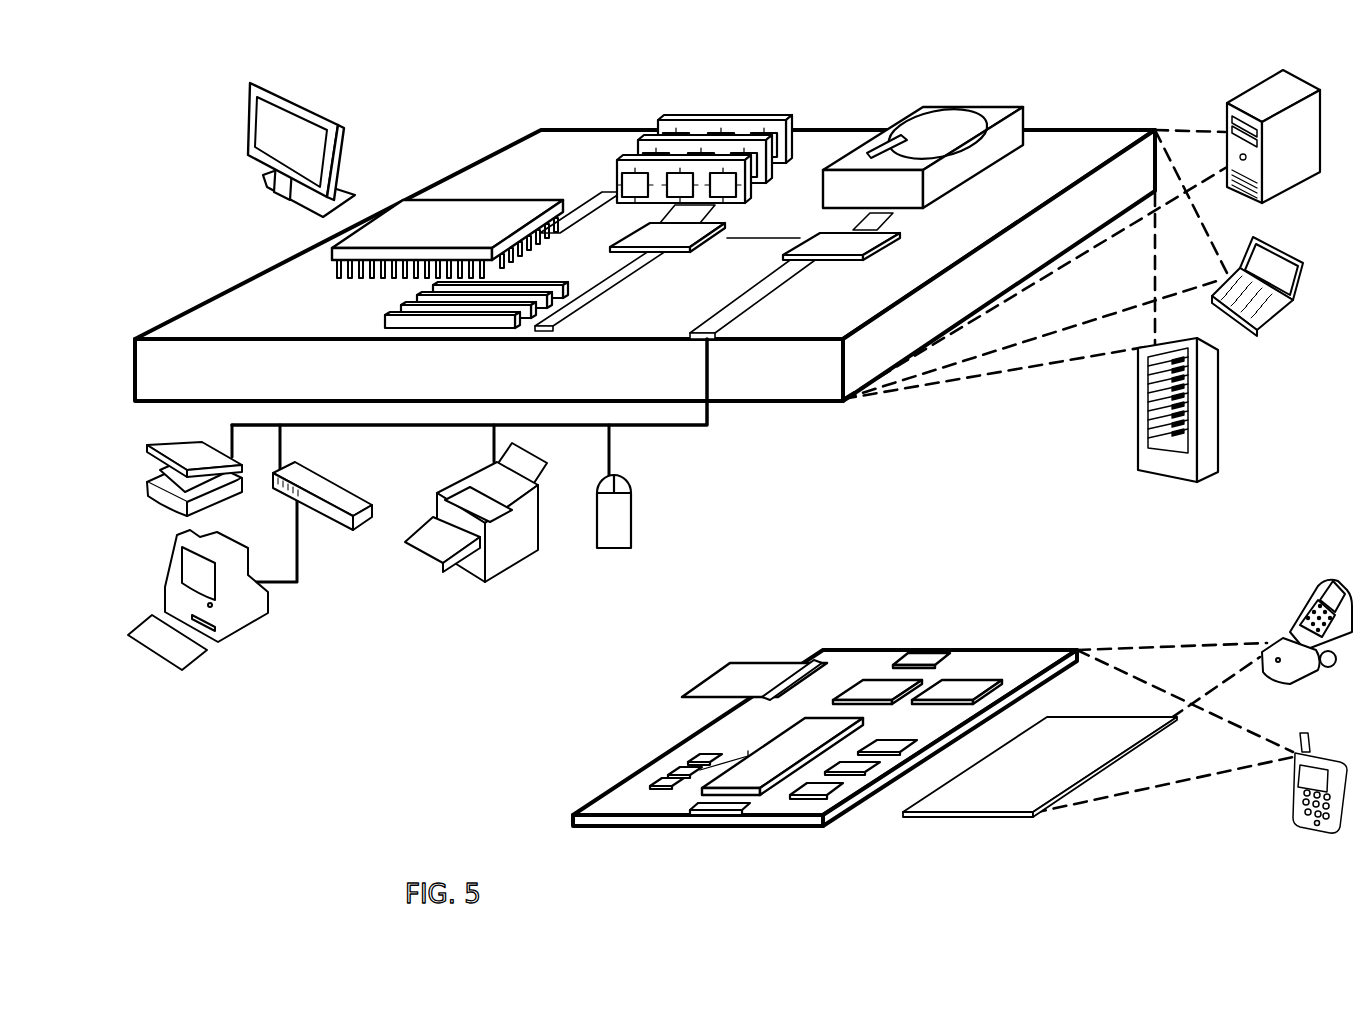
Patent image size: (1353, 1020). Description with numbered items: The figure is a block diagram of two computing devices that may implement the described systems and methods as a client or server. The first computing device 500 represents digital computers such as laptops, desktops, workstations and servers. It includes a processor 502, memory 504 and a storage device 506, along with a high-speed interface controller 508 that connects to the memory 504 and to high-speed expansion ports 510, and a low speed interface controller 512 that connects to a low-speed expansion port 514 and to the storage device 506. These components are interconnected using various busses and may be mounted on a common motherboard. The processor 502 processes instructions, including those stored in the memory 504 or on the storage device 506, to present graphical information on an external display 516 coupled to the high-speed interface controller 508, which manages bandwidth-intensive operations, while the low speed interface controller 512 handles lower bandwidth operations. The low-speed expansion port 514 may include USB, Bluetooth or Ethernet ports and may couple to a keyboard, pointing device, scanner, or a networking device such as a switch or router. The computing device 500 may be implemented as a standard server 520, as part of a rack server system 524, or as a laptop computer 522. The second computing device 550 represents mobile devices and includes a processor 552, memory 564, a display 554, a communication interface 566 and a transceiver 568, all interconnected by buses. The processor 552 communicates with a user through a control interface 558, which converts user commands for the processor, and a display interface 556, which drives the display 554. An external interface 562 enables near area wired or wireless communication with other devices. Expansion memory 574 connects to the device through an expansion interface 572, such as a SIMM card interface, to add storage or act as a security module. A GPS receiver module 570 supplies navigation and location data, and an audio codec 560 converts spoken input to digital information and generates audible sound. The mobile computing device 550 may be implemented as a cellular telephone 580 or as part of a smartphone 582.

The computing device 500 is at (460, 95).
The processor 502 is at (332, 258).
The memory 504 is at (680, 122).
The storage device 506 is at (915, 113).
The high-speed interface controller 508 is at (643, 236).
The high-speed expansion ports 510 is at (403, 303).
The low speed interface controller 512 is at (840, 240).
The low-speed expansion port 514 is at (708, 336).
The display 516 is at (250, 85).
The standard server 520 is at (1227, 106).
The laptop computer 522 is at (1248, 243).
The rack server system 524 is at (1140, 431).
The computing device 550 is at (801, 612).
The processor 552 is at (757, 793).
The display 554 is at (1033, 816).
The display interface 556 is at (838, 810).
The control interface 558 is at (853, 768).
The audio codec 560 is at (887, 750).
The external interface 562 is at (718, 815).
The memory 564 is at (667, 774).
The communication interface 566 is at (873, 690).
The transceiver 568 is at (958, 685).
The GPS receiver module 570 is at (877, 687).
The expansion interface 572 is at (807, 660).
The expansion memory 574 is at (730, 663).
The cellular telephone 580 is at (1318, 590).
The smartphone 582 is at (1303, 735).